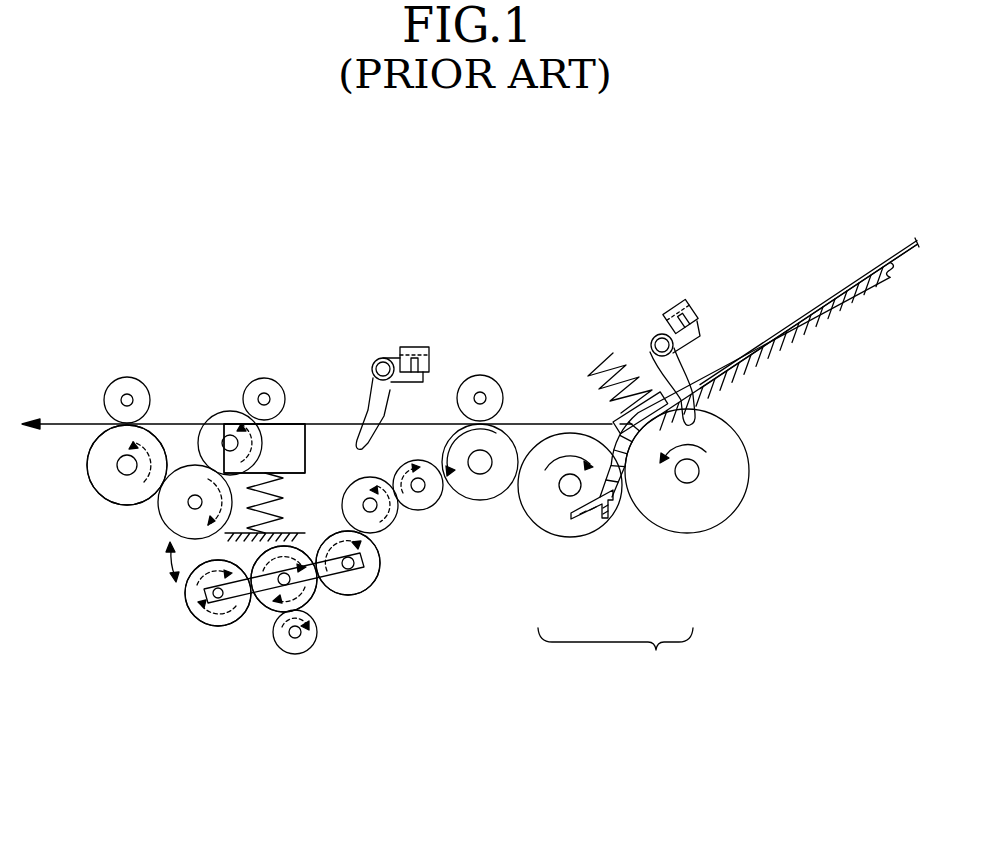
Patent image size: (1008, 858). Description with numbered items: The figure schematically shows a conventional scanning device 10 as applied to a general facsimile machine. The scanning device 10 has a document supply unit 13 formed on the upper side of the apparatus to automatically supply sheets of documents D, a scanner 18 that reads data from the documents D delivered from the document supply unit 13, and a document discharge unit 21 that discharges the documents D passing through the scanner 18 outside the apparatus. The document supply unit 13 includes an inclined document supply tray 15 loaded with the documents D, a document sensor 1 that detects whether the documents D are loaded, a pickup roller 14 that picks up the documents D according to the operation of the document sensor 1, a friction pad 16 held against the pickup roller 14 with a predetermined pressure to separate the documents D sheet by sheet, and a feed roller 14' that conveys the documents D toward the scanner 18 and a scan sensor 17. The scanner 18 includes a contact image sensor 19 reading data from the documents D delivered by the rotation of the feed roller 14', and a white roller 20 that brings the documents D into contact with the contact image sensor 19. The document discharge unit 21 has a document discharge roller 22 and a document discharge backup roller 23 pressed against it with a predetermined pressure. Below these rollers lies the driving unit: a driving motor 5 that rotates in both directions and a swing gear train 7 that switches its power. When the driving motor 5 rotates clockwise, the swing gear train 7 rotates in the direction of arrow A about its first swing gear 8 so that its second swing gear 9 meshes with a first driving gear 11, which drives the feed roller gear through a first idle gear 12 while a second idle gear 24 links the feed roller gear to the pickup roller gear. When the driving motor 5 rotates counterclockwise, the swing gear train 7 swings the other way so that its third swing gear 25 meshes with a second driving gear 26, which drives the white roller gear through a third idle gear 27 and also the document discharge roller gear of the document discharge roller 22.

The document sensor 1 is at (683, 303).
The driving motor 5 is at (288, 650).
The swing gear train 7 is at (369, 595).
The first swing gear 8 is at (267, 605).
The second swing gear 9 is at (350, 590).
The scanning device 10 is at (142, 122).
The first driving gear 11 is at (385, 518).
The first idle gear 12 is at (433, 507).
The document supply unit 13 is at (615, 657).
The pickup roller 14 is at (687, 524).
The feed roller 14' is at (512, 531).
The document supply tray 15 is at (840, 308).
The friction pad 16 is at (653, 397).
The scan sensor 17 is at (408, 347).
The scanner 18 is at (300, 416).
The contact image sensor 19 is at (305, 455).
The white roller 20 is at (263, 383).
The document discharge unit 21 is at (116, 504).
The document discharge roller 22 is at (107, 465).
The document discharge backup roller 23 is at (122, 390).
The second idle gear 24 is at (553, 440).
The third swing gear 25 is at (200, 613).
The second driving gear 26 is at (160, 517).
The third idle gear 27 is at (228, 413).
The arrow A is at (164, 563).
The documents D is at (893, 258).